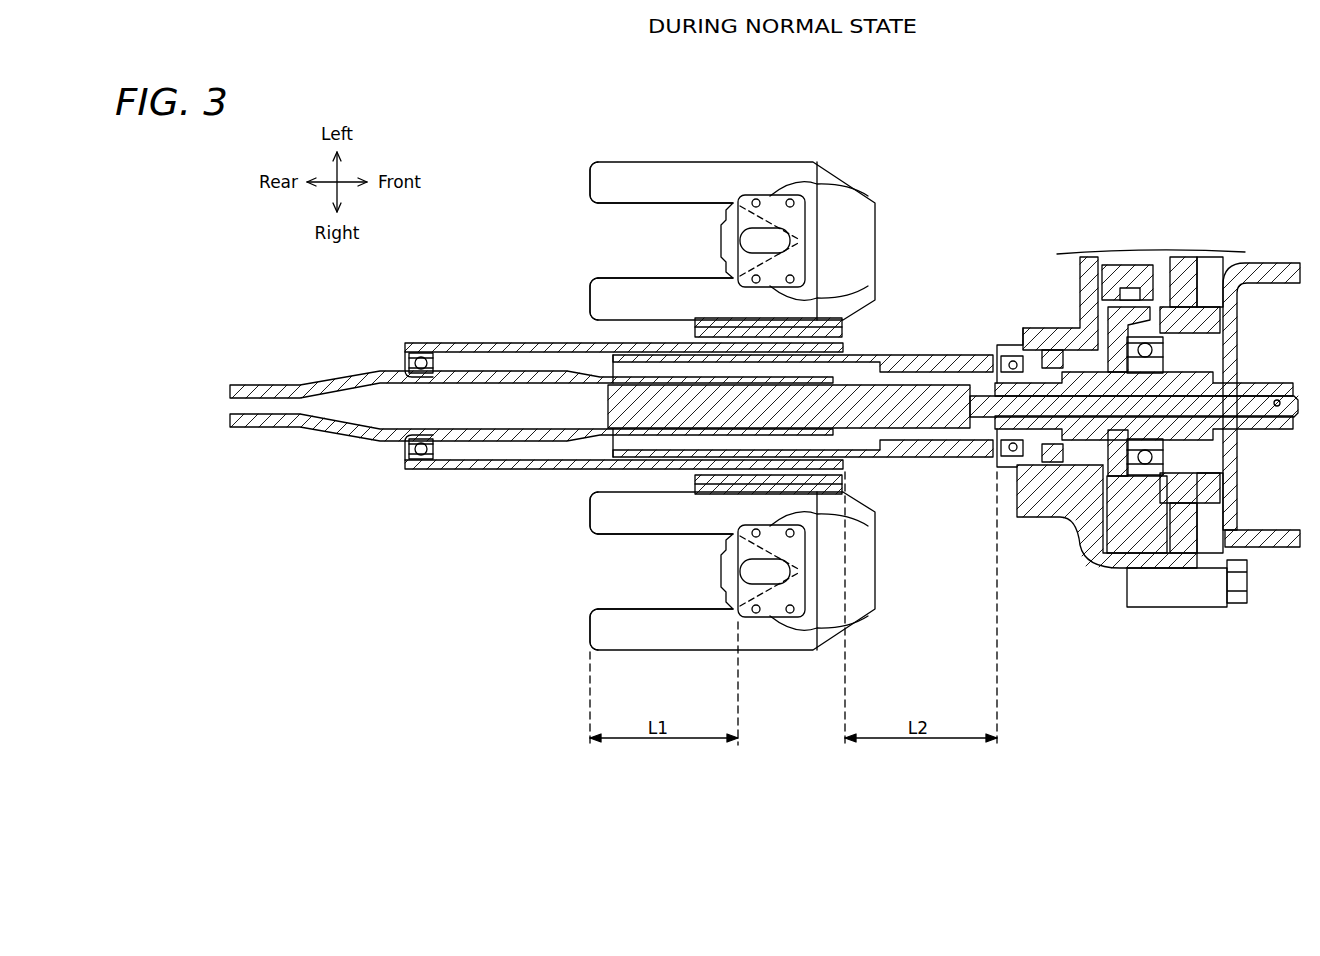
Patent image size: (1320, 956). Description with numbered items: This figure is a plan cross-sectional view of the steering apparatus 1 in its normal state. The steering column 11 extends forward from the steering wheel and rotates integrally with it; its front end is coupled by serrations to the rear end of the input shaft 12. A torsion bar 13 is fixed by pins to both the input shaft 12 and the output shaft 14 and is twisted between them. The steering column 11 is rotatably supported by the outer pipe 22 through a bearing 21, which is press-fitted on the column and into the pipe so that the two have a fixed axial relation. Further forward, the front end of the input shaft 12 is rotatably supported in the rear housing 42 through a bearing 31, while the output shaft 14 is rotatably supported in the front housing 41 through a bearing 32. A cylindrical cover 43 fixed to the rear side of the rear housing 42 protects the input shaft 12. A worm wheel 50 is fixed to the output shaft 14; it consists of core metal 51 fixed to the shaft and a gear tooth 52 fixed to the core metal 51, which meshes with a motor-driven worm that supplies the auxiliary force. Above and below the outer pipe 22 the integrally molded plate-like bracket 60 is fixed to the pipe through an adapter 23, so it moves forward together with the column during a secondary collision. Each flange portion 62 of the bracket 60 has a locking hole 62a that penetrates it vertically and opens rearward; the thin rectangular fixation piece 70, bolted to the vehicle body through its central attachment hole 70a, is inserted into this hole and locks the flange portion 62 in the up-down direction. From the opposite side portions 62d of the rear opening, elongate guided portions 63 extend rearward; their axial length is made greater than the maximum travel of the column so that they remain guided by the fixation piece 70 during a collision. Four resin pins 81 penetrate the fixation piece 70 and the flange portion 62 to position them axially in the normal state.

The steering apparatus 1 is at (995, 159).
The steering column 11 is at (287, 385).
The input shaft 12 is at (915, 395).
The torsion bar 13 is at (1090, 397).
The output shaft 14 is at (1258, 385).
The bearing 21 is at (421, 350).
The outer pipe 22 is at (493, 343).
The adapter 23 is at (838, 338).
The bearing 31 is at (1013, 360).
The bearing 32 is at (1152, 458).
The front housing 41 is at (1183, 540).
The rear housing 42 is at (1057, 512).
The cylindrical cover 43 is at (960, 358).
The worm wheel 50 is at (1085, 203).
The core metal 51 is at (1135, 296).
The gear tooth 52 is at (1117, 272).
The bracket 60 is at (624, 158).
The flange portion 62 is at (875, 152).
The locking hole 62a is at (803, 242).
The side portion 62d is at (742, 182).
The guided portion 63 is at (595, 182).
The fixation piece 70 is at (718, 236).
The attachment hole 70a is at (737, 248).
The resin pin 81 is at (860, 186).